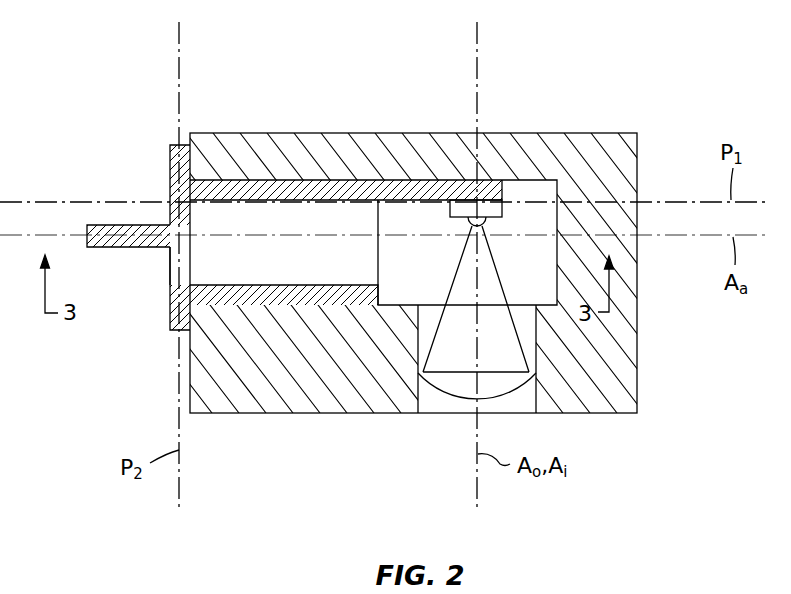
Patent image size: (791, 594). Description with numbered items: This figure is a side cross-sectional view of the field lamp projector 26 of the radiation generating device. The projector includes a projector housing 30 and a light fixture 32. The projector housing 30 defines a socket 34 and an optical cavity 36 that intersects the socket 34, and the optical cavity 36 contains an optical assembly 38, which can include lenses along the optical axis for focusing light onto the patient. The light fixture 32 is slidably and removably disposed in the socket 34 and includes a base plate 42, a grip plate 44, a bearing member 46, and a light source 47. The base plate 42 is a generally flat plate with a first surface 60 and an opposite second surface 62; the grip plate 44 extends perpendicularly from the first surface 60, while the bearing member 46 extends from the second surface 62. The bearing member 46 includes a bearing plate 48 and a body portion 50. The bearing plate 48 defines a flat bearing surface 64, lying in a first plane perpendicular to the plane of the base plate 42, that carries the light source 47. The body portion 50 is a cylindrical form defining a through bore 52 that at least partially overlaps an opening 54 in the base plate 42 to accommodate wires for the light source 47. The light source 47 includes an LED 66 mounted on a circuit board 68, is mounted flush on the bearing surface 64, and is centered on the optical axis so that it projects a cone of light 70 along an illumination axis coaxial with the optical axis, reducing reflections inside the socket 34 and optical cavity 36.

The field lamp projector 26 is at (609, 86).
The projector housing 30 is at (639, 157).
The light fixture 32 is at (382, 166).
The socket 34 is at (322, 182).
The optical cavity 36 is at (524, 331).
The optical assembly 38 is at (433, 401).
The base plate 42 is at (172, 302).
The grip plate 44 is at (117, 244).
The bearing member 46 is at (365, 190).
The light source 47 is at (492, 193).
The bearing plate 48 is at (458, 192).
The body portion 50 is at (243, 190).
The through bore 52 is at (272, 200).
The opening 54 is at (172, 265).
The first surface 60 is at (170, 172).
The second surface 62 is at (192, 163).
The bearing surface 64 is at (414, 200).
The light-emitting-diode (LED) 66 is at (486, 222).
The circuit board 68 is at (500, 208).
The cone of light 70 is at (443, 338).